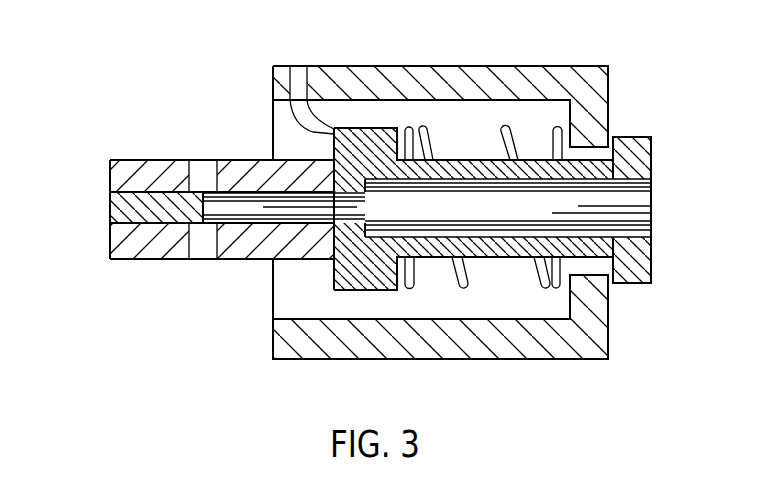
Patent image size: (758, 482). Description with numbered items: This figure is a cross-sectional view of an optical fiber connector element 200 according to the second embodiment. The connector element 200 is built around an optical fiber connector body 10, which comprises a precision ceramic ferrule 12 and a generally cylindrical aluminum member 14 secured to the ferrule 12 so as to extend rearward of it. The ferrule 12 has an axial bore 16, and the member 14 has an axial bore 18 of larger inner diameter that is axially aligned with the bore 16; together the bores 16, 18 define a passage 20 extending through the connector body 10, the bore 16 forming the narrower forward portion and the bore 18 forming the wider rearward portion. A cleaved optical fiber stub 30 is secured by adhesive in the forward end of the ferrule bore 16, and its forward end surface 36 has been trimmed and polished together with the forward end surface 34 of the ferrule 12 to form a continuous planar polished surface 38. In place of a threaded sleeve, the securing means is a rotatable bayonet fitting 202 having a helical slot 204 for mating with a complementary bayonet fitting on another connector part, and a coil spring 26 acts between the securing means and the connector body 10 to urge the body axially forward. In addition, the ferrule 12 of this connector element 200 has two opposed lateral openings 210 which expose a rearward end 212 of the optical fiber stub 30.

The optical fiber connector body 10 is at (483, 56).
The precision ceramic ferrule 12 is at (200, 198).
The cylindrical aluminum member 14 is at (648, 150).
The axial bore 16 is at (478, 202).
The axial bore 18 is at (640, 192).
The passage 20 is at (652, 218).
The coil spring 26 is at (534, 267).
The optical fiber stub 30 is at (127, 217).
The forward end surface 34 is at (115, 180).
The forward end surface 36 is at (115, 205).
The continuous planar polished surface 38 is at (71, 160).
The connector element 200 is at (485, 186).
The rotatable bayonet fitting 202 is at (407, 64).
The helical slot 204 is at (299, 64).
The opposed lateral openings 210 is at (204, 168).
The rearward end 212 is at (203, 211).